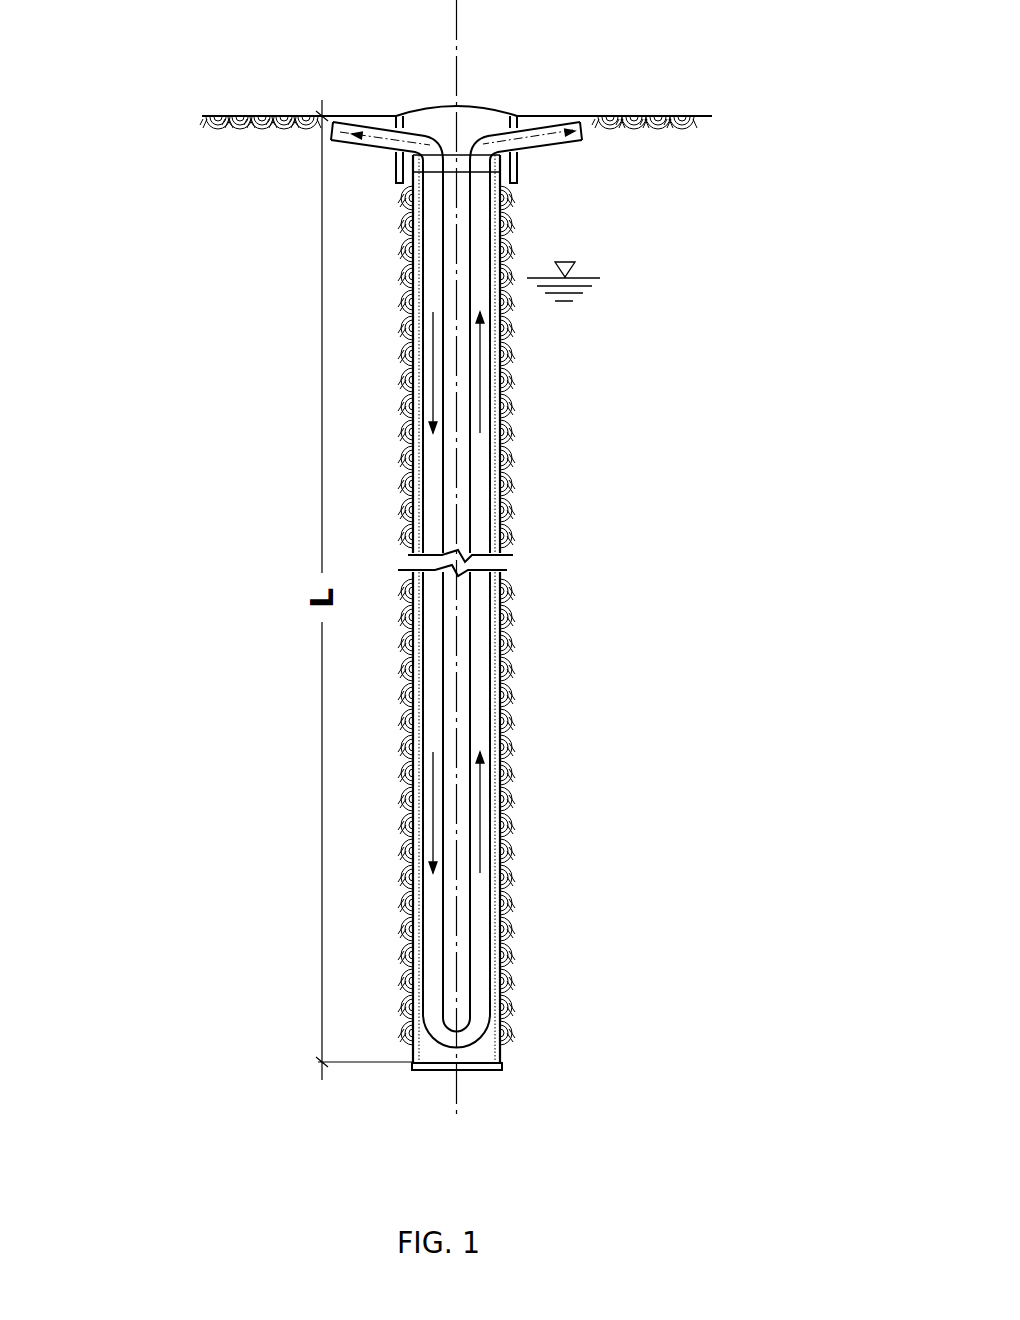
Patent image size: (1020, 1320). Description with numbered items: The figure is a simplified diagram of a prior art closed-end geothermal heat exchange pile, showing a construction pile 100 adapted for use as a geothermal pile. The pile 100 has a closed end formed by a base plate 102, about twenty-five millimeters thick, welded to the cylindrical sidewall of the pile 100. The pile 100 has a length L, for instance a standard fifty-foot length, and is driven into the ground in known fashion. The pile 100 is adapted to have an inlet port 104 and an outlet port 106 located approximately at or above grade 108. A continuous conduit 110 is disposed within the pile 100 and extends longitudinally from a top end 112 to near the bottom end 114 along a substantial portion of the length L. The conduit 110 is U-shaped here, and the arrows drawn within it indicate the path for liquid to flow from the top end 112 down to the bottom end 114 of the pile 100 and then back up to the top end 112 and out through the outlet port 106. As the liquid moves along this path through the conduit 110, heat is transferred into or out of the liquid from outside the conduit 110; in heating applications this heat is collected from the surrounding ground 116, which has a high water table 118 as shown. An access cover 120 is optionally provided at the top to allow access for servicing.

The construction pile 100 is at (500, 835).
The base plate 102 is at (442, 1058).
The inlet port 104 is at (335, 143).
The outlet port 106 is at (560, 148).
The grade 108 is at (565, 117).
The conduit 110 is at (480, 477).
The top end 112 is at (358, 190).
The bottom end 114 is at (367, 960).
The surrounding ground 116 is at (513, 375).
The water table 118 is at (582, 271).
The access cover 120 is at (443, 105).